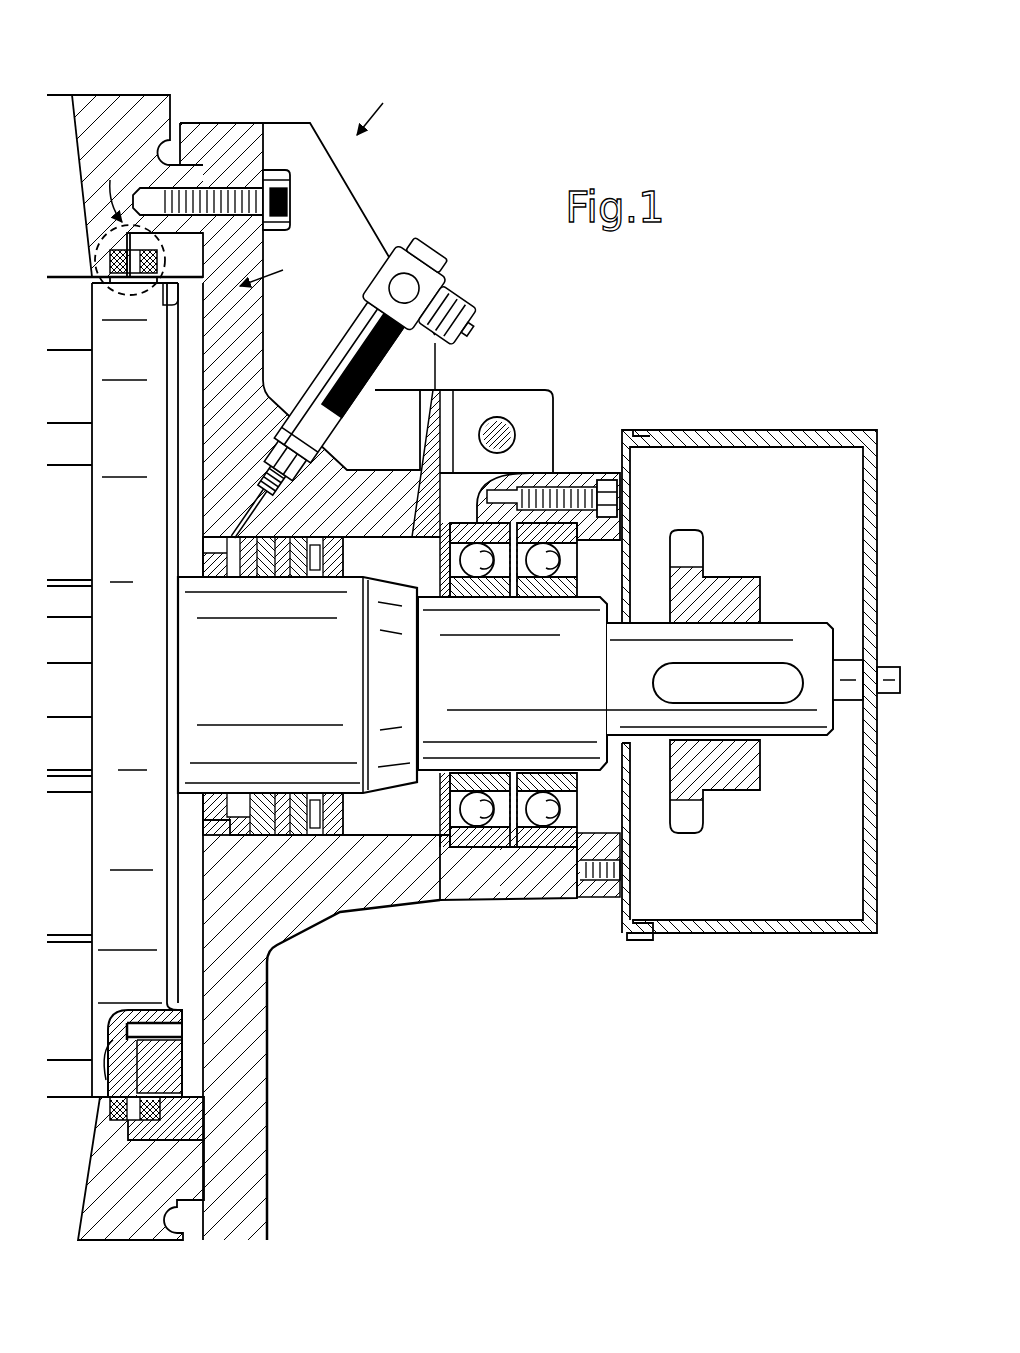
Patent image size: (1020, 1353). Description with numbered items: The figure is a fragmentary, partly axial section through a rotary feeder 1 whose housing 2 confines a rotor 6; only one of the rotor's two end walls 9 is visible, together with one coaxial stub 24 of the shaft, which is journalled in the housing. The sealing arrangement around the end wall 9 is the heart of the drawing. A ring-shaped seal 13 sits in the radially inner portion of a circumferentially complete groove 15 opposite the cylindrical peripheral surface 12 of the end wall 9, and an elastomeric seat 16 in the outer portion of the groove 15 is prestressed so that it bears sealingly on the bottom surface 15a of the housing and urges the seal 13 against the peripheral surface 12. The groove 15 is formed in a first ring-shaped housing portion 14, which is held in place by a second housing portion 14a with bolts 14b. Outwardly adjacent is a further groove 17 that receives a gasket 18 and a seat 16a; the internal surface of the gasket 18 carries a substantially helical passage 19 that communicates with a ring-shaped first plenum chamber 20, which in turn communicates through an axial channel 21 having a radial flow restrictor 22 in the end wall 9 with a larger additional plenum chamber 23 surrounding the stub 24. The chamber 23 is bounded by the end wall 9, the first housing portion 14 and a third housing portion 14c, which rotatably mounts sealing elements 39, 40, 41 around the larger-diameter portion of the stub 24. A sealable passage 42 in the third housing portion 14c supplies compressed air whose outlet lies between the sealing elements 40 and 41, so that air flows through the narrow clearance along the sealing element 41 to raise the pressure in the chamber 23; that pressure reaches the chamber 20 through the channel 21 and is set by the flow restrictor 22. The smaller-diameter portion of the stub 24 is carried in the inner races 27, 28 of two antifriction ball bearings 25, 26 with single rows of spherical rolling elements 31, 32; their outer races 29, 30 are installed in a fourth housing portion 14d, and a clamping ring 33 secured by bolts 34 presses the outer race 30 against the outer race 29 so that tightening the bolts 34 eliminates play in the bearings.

The rotary feeder 1 is at (379, 105).
The housing 2 is at (268, 269).
The rotor 6 is at (52, 538).
The end wall 9 is at (100, 400).
The peripheral surface 12 is at (143, 531).
The seal 13 is at (203, 307).
The first housing portion 14 is at (191, 187).
The second housing portion 14a is at (73, 104).
The bolt 14b is at (278, 170).
The third housing portion 14c is at (247, 342).
The fourth housing portion 14d is at (536, 400).
The groove 15 is at (110, 258).
The bottom surface 15a is at (160, 1128).
The elastomeric seat 16 is at (217, 250).
The seat 16a is at (93, 276).
The further groove 17 is at (113, 258).
The gasket 18 is at (120, 272).
The helical passage 19 is at (130, 292).
The first plenum chamber 20 is at (140, 1140).
The channel 21 is at (148, 1030).
The flow restrictor 22 is at (147, 1080).
The additional plenum chamber 23 is at (193, 975).
The stub 24 is at (513, 681).
The antifriction ball bearing 25 is at (487, 856).
The antifriction ball bearing 26 is at (527, 862).
The inner race 27 is at (468, 587).
The inner race 28 is at (553, 587).
The outer race 29 is at (462, 846).
The outer race 30 is at (563, 848).
The rolling elements 31 is at (476, 800).
The rolling elements 32 is at (553, 808).
The clamping ring 33 is at (600, 526).
The bolt 34 is at (607, 496).
The sealing element 39 is at (327, 793).
The sealing element 40 is at (272, 793).
The sealing element 41 is at (215, 793).
The sealable passage 42 is at (253, 503).